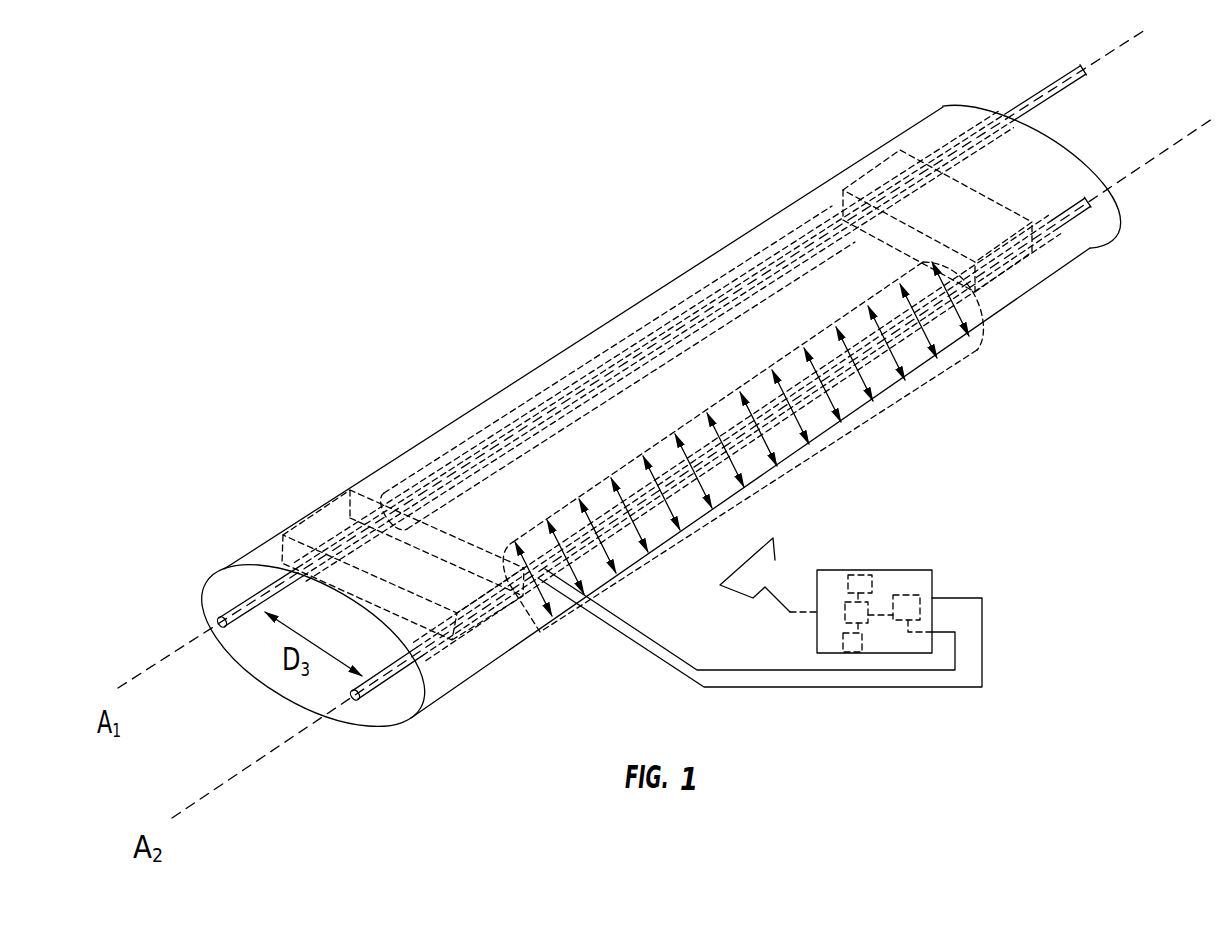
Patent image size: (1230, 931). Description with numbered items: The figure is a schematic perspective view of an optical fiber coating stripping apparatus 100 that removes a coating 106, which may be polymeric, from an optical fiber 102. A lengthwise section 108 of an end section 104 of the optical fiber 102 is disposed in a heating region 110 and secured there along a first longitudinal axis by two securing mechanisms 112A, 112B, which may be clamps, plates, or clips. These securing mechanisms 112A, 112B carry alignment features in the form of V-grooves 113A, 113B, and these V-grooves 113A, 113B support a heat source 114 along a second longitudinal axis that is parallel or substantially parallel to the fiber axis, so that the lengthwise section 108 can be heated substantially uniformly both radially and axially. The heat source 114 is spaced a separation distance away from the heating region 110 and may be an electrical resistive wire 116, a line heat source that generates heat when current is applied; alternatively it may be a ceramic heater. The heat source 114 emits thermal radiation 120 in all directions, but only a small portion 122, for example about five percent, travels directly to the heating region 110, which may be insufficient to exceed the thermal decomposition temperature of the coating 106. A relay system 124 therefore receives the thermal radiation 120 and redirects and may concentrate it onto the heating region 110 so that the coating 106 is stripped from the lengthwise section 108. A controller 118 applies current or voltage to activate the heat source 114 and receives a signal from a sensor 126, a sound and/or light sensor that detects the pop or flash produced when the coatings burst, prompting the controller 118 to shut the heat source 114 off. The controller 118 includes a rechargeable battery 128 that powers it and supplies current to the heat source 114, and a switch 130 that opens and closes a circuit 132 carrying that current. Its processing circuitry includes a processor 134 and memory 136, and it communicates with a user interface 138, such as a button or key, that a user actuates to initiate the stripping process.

The optical fiber coating stripping apparatus 100 is at (580, 127).
The optical fiber 102 is at (1030, 96).
The end section 104 is at (778, 266).
The coating 106 is at (723, 307).
The lengthwise section 108 is at (567, 393).
The heating region 110 is at (660, 318).
The securing mechanism 112A is at (978, 200).
The securing mechanism 112B is at (468, 647).
The V-groove 113A is at (890, 183).
The V-groove 113B is at (337, 533).
The heat source 114 is at (973, 290).
The electrical resistive wire 116 is at (833, 377).
The controller 118 is at (935, 572).
The thermal radiation 120 is at (772, 487).
The portion of the thermal radiation 122 is at (647, 443).
The relay system 124 is at (540, 627).
The sensor 126 is at (775, 560).
The rechargeable battery 128 is at (895, 595).
The switch 130 is at (908, 632).
The circuit 132 is at (983, 633).
The processor 134 is at (843, 622).
The memory 136 is at (863, 575).
The user interface 138 is at (852, 652).